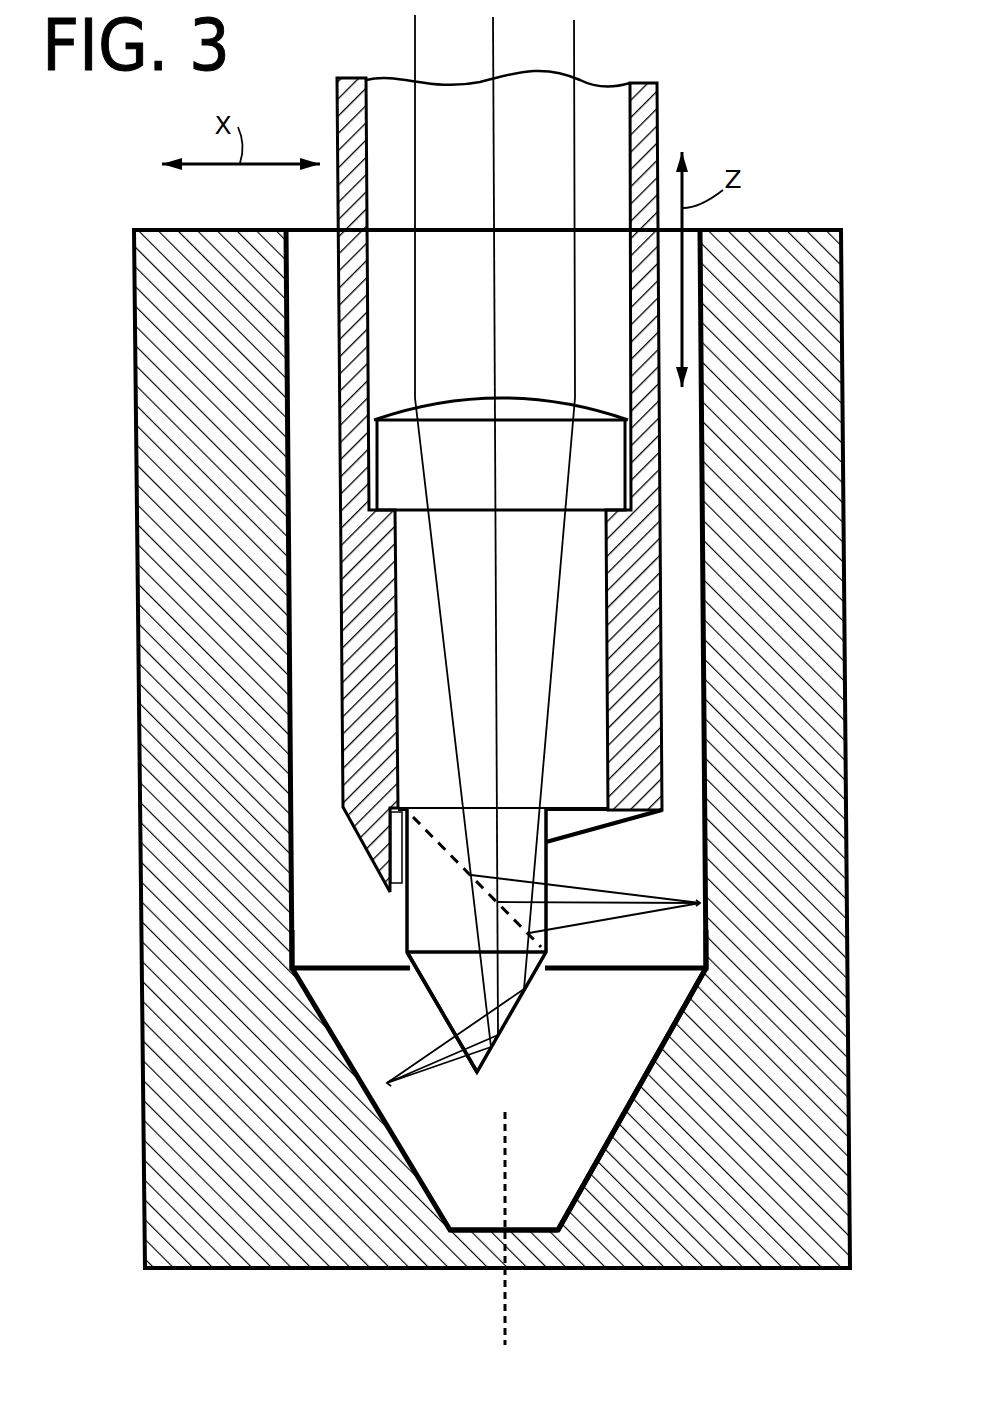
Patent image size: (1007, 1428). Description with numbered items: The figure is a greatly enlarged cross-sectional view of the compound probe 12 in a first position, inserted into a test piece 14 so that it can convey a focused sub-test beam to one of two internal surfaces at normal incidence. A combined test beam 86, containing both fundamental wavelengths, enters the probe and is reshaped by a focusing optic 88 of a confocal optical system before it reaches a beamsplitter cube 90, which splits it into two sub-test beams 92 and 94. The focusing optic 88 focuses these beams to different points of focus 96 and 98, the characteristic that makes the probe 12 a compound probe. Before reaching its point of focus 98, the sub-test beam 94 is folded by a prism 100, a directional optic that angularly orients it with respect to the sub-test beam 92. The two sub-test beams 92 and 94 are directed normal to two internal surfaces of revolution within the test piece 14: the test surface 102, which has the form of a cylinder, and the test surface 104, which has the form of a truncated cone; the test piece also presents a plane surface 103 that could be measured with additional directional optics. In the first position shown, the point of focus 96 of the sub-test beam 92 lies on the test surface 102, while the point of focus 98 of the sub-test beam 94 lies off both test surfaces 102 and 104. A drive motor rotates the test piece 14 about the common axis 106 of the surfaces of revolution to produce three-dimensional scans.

The compound probe 12 is at (658, 115).
The test piece 14 is at (135, 343).
The combined test beam 86 is at (417, 158).
The focusing optic 88 is at (522, 397).
The beamsplitter cube 90 is at (418, 915).
The sub-test beam 92 is at (607, 922).
The sub-test beam 94 is at (428, 1048).
The point of focus 96 is at (703, 898).
The point of focus 98 is at (388, 1080).
The prism 100 is at (453, 980).
The test surface 102 is at (292, 847).
The plane surface 103 is at (532, 1223).
The test surface 104 is at (610, 1122).
The common axis 106 is at (507, 1308).